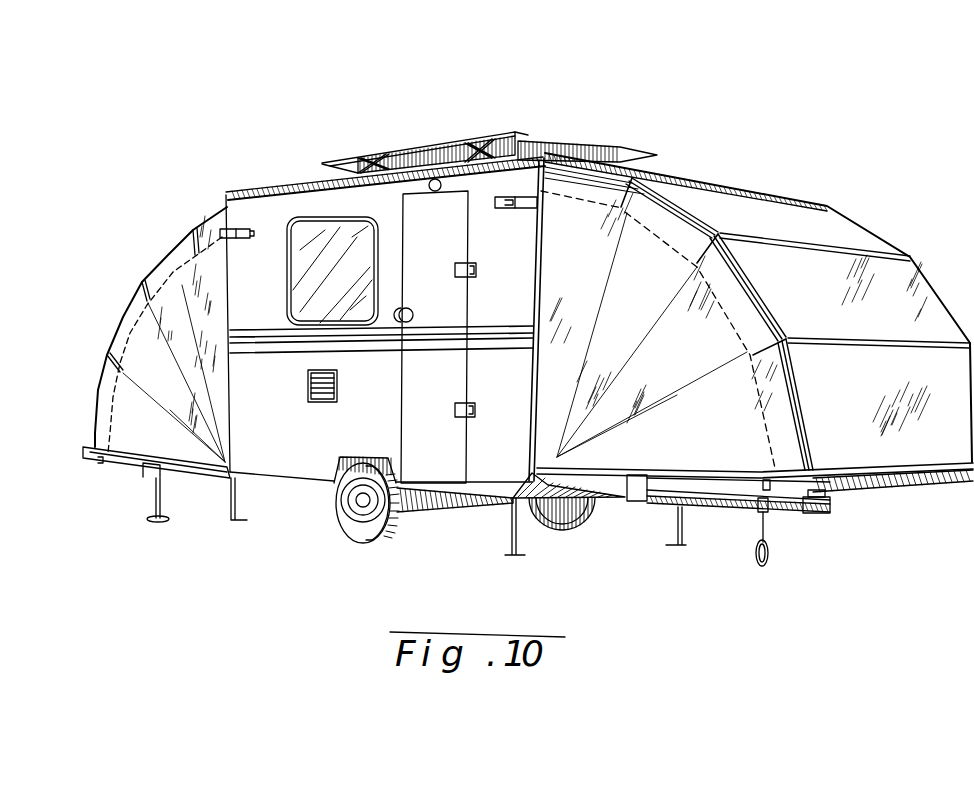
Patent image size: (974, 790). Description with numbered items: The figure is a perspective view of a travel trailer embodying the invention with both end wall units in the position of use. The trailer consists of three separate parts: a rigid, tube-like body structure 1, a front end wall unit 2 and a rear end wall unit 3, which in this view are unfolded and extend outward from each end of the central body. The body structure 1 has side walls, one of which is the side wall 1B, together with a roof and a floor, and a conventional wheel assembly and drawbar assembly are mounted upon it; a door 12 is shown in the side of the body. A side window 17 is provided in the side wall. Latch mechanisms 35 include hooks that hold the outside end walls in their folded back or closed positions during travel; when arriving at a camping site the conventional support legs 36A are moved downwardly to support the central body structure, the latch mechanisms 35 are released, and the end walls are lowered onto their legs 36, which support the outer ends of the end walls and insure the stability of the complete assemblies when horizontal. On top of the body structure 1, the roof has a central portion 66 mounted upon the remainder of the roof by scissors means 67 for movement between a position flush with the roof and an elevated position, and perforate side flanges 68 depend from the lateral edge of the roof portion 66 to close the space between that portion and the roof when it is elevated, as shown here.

The body structure 1 is at (267, 183).
The side wall 1B is at (290, 457).
The front end wall unit 2 is at (880, 220).
The rear end wall unit 3 is at (166, 225).
The door 12 is at (408, 213).
The side window 17 is at (340, 232).
The latch mechanism 35 is at (243, 238).
The leg 36 is at (155, 500).
The support leg 36A is at (228, 512).
The central roof portion 66 is at (401, 146).
The scissors means 67 is at (474, 143).
The perforate side flange 68 is at (535, 151).